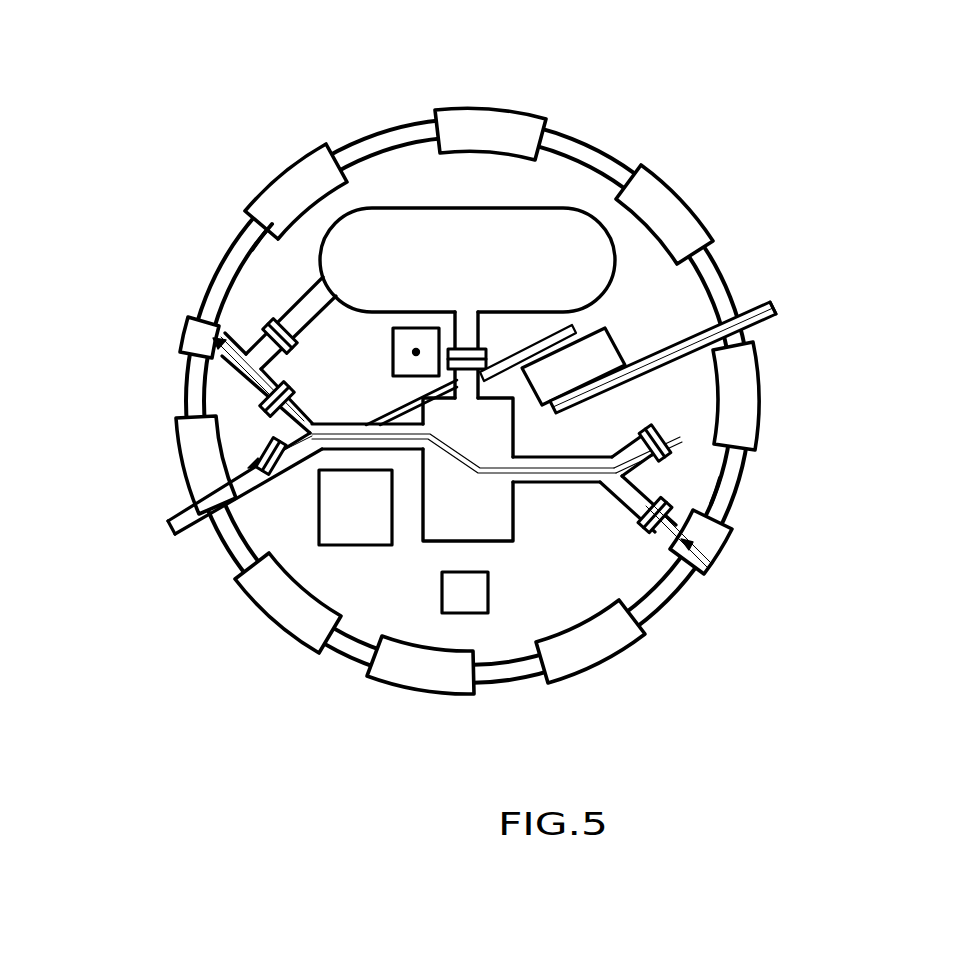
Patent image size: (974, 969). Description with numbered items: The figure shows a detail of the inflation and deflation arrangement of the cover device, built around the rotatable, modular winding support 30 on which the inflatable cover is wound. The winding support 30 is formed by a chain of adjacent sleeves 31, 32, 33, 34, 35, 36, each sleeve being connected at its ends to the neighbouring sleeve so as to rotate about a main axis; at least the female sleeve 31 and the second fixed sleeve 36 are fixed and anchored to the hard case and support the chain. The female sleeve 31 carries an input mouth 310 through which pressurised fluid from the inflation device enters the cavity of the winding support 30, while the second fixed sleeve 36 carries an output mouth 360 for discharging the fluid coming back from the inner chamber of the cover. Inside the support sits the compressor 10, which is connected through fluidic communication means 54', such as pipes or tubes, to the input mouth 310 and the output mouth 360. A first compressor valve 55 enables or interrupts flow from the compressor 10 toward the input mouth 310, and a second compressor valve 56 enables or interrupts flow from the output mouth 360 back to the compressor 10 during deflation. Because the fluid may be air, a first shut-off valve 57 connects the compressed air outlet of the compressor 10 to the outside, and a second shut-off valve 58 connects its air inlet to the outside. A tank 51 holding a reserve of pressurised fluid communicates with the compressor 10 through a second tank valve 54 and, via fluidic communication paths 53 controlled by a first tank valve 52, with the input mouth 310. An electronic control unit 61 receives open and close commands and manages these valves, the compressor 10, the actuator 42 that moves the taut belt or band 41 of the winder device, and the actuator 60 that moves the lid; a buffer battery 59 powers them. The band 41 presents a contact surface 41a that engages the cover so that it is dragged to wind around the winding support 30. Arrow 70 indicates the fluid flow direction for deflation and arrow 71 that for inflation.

The compressor 10 is at (445, 522).
The winding support 30 is at (731, 272).
The female sleeve 31 is at (185, 337).
The sleeve 32 is at (223, 284).
The sleeve 33 is at (305, 180).
The sleeve 34 is at (745, 395).
The sleeve 35 is at (718, 490).
The second fixed sleeve 36 is at (718, 545).
The taut belt or band 41 is at (779, 307).
The contact surface 41a is at (707, 345).
The actuator 42 is at (702, 246).
The tank 51 is at (405, 237).
The first tank valve 52 is at (278, 332).
The fluidic communication paths 53 is at (282, 369).
The second tank valve 54 is at (531, 210).
The fluidic communication means 54' is at (392, 451).
The first compressor valve 55 is at (262, 404).
The second compressor valve 56 is at (659, 533).
The first shut-off valve 57 is at (275, 470).
The second shut-off valve 58 is at (686, 438).
The buffer battery 59 is at (477, 595).
The actuator 60 is at (405, 338).
The electronic control unit 61 is at (373, 532).
The arrow 70 is at (556, 478).
The arrow 71 is at (600, 348).
The input mouth 310 is at (198, 346).
The output mouth 360 is at (700, 570).